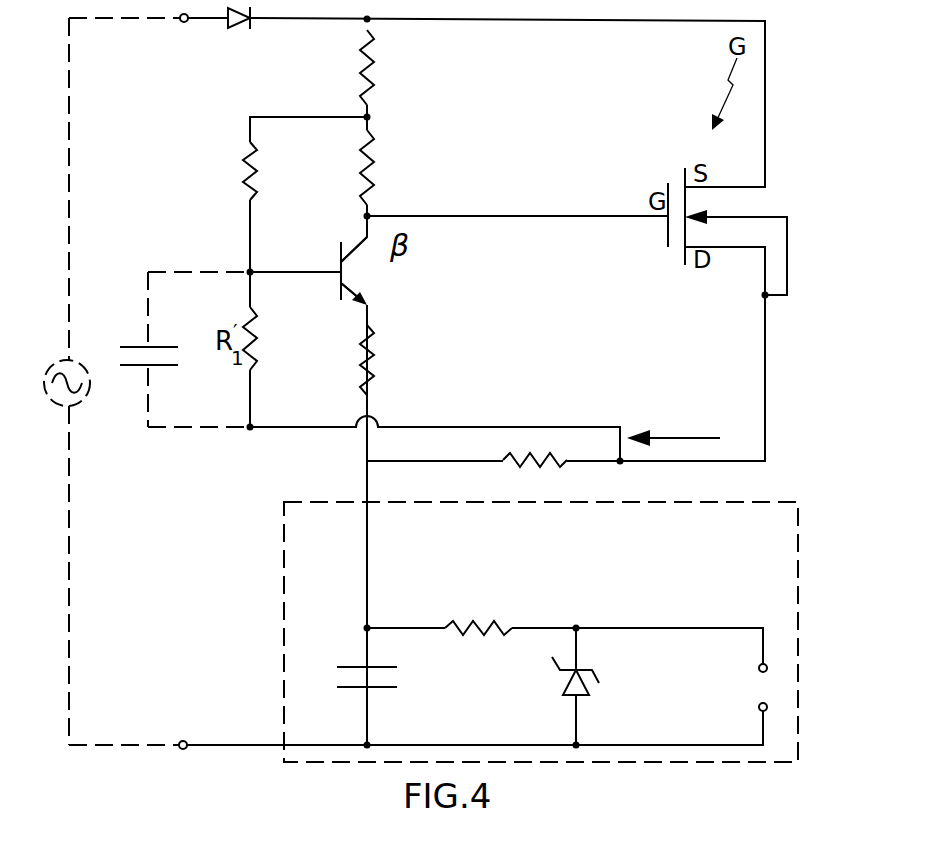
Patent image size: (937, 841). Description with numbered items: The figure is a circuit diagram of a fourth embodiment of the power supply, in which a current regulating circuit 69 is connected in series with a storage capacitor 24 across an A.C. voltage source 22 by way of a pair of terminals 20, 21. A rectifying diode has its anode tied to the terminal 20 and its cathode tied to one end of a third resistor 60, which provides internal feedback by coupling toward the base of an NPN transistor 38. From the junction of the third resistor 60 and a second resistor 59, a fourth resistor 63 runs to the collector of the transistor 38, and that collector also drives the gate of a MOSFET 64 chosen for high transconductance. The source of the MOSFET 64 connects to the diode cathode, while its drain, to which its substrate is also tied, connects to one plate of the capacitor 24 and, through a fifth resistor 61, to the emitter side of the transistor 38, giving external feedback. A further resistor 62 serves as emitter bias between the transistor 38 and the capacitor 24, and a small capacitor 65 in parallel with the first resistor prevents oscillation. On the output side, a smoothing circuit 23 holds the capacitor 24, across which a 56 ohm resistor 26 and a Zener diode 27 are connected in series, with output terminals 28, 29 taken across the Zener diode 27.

The terminal 20 is at (184, 22).
The terminal 21 is at (188, 736).
The transistor 38 is at (235, 33).
The third resistor 60 is at (372, 88).
The fourth resistor 63 is at (372, 175).
The second resistor 59 is at (255, 182).
The further resistor 62 is at (372, 373).
The small capacitor 65 is at (158, 342).
The voltage source 22 is at (85, 400).
The fifth resistor 61 is at (546, 459).
The MOSFET 64 is at (732, 296).
The current regulating circuit 69 is at (776, 68).
The current ic 56 is at (688, 438).
The smoothing circuit 23 is at (727, 500).
The storage capacitor 24 is at (388, 676).
The resistor 26 is at (488, 628).
The Zener diode 27 is at (590, 690).
The output terminal 28 is at (759, 668).
The output terminal 29 is at (759, 707).